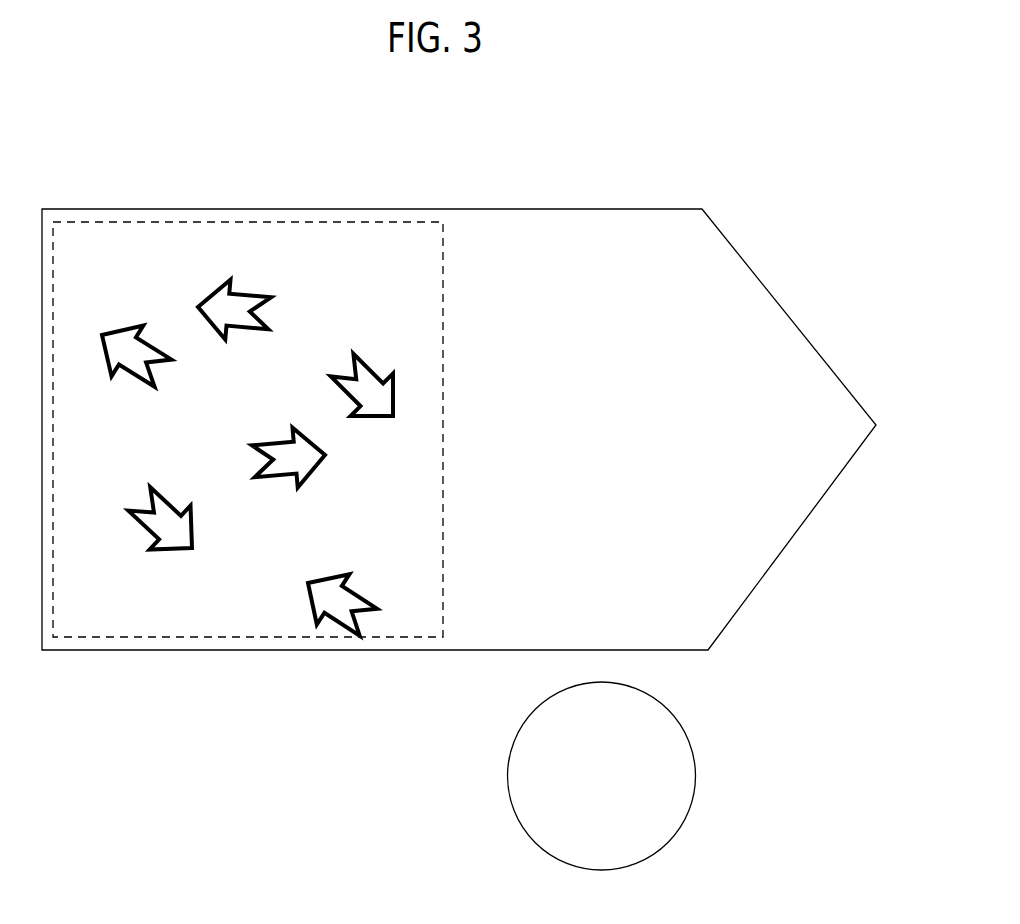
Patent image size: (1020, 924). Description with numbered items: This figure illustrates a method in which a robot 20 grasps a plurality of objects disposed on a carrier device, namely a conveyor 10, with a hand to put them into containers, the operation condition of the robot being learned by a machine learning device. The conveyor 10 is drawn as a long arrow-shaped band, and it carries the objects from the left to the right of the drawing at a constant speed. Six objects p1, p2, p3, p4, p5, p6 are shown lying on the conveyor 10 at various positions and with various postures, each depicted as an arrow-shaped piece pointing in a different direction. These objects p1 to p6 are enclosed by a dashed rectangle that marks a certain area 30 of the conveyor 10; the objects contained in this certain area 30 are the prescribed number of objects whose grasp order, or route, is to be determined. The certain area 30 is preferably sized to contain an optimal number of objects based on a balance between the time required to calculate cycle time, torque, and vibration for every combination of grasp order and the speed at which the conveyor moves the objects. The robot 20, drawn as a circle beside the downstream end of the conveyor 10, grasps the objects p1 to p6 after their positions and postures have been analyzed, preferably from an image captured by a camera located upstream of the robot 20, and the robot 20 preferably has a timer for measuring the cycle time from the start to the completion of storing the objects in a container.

The carrier device (conveyor) 10 is at (620, 209).
The robot 20 is at (678, 722).
The certain area 30 is at (444, 435).
The object p1 is at (368, 370).
The object p2 is at (355, 592).
The object p3 is at (262, 478).
The object p4 is at (250, 295).
The object p5 is at (143, 532).
The object p6 is at (102, 363).